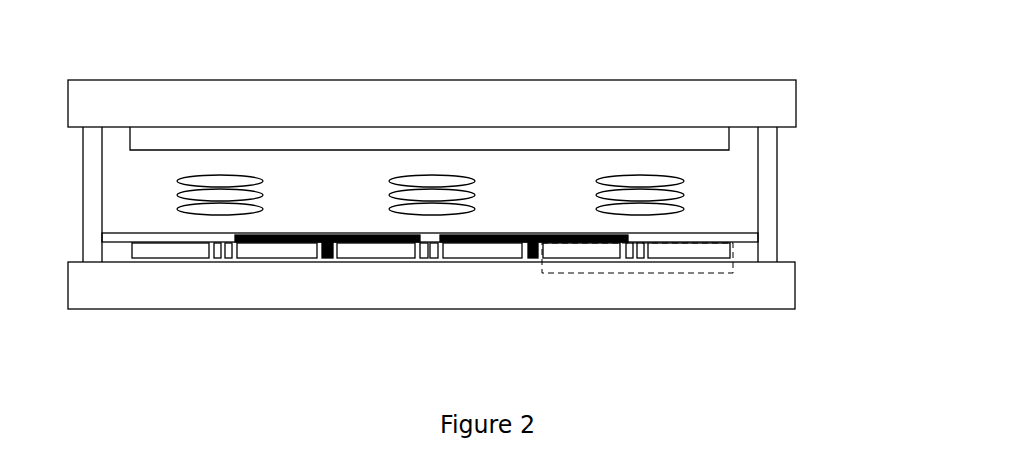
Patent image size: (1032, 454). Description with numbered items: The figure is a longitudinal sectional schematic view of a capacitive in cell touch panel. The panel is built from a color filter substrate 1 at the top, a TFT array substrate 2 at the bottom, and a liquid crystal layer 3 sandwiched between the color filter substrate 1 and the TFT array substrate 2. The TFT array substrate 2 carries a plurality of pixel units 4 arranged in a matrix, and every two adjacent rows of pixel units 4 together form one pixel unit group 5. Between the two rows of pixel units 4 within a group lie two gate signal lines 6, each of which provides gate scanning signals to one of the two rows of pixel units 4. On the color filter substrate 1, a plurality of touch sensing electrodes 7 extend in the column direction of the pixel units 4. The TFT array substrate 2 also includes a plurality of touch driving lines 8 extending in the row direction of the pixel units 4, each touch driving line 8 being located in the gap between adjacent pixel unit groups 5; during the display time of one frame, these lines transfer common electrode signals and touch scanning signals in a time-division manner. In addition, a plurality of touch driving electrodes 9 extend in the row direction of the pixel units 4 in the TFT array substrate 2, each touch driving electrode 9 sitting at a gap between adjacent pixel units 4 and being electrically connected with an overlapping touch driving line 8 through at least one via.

The color filter substrate 1 is at (796, 103).
The TFT array substrate 2 is at (796, 283).
The liquid crystal layer 3 is at (685, 193).
The pixel unit 4 is at (695, 258).
The pixel unit group 5 is at (652, 273).
The gate signal line 6 is at (632, 260).
The touch sensing electrode 7 is at (397, 137).
The touch driving line 8 is at (533, 260).
The touch driving electrode 9 is at (291, 243).